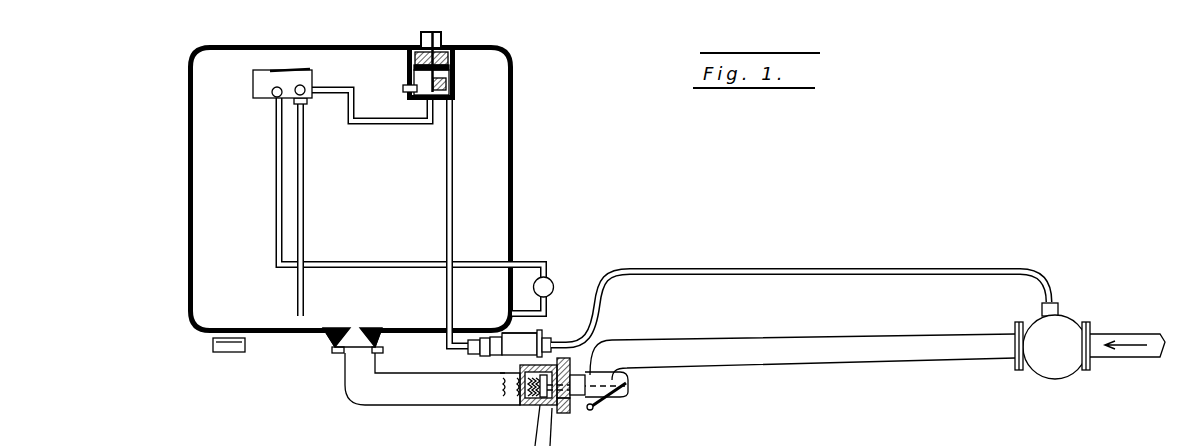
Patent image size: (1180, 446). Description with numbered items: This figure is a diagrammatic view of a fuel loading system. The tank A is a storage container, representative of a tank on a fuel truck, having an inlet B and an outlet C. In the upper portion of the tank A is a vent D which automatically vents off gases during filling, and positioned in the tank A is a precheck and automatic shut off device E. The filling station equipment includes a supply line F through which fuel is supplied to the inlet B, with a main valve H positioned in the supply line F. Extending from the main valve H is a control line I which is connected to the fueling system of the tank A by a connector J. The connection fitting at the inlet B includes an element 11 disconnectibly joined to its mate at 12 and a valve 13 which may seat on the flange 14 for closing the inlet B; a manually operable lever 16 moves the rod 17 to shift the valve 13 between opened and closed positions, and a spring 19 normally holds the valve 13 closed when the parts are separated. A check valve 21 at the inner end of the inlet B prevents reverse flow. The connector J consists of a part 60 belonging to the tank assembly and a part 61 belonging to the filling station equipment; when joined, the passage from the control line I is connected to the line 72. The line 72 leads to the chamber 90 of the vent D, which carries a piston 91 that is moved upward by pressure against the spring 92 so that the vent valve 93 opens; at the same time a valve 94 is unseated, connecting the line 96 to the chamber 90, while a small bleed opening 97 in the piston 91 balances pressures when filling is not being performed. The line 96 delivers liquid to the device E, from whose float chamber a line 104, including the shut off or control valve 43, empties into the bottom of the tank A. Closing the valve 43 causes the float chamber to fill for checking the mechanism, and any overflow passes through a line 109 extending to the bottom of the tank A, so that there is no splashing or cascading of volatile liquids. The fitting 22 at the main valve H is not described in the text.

The tank A is at (515, 125).
The inlet B is at (352, 376).
The outlet C is at (220, 350).
The vent D is at (465, 50).
The precheck and automatic shut off device E is at (262, 80).
The supply line F is at (735, 362).
The main valve H is at (1046, 358).
The control line I is at (781, 268).
The connector J is at (525, 332).
The element of connection fitting 11 is at (612, 408).
The joint of connection fitting 12 is at (578, 400).
The valve 13 is at (530, 399).
The flange 14 is at (548, 398).
The manually operable lever 16 is at (614, 388).
The rod 17 is at (592, 392).
The spring 19 is at (508, 390).
The check valve 21 is at (342, 340).
The valve fitting 22 is at (1060, 330).
The shut off or control valve 43 is at (549, 278).
The connector part 60 is at (468, 350).
The connector part 61 is at (500, 332).
The line 72 is at (446, 293).
The chamber 90 is at (450, 89).
The piston 91 is at (453, 70).
The spring 92 is at (416, 50).
The vent valve 93 is at (438, 33).
The valve 94 is at (404, 90).
The line 96 is at (412, 128).
The bleed opening 97 is at (414, 70).
The line 104 is at (380, 256).
The line 109 is at (307, 200).